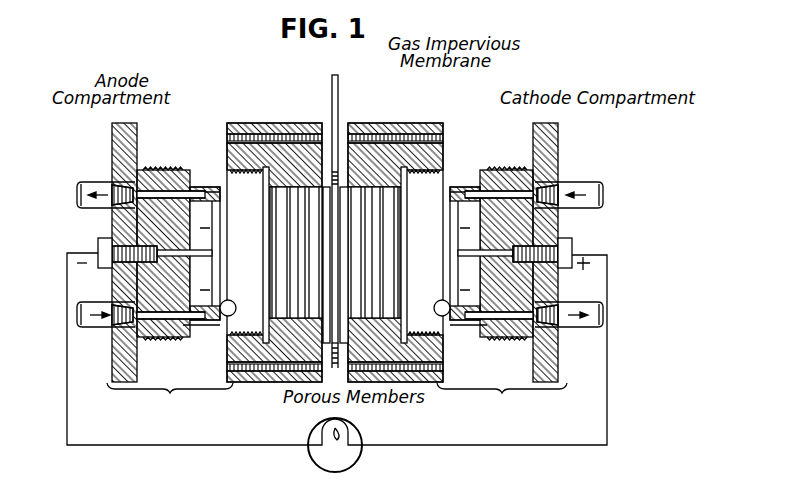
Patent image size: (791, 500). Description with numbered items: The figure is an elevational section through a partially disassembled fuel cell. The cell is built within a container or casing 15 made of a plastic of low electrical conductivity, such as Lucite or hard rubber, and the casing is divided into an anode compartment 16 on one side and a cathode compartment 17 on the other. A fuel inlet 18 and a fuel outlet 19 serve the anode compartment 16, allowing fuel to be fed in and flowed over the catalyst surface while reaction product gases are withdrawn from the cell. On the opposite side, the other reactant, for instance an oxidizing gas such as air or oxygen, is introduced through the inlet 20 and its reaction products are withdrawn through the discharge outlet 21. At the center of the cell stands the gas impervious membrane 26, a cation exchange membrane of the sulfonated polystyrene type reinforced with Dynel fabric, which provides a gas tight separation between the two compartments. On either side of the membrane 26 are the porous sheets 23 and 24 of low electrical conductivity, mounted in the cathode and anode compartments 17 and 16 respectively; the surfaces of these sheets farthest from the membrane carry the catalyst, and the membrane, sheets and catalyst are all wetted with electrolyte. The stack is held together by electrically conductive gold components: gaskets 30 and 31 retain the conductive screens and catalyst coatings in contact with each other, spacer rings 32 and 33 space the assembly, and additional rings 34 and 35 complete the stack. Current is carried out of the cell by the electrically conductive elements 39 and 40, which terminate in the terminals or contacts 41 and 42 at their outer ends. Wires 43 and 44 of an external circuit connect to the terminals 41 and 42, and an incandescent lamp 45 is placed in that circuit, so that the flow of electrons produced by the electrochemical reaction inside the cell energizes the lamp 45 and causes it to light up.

The container or casing 15 is at (270, 124).
The anode compartment 16 is at (207, 210).
The cathode compartment 17 is at (470, 215).
The fuel inlet 18 is at (100, 329).
The fuel outlet 19 is at (98, 182).
The inlet 20 is at (578, 181).
The discharge outlet 21 is at (579, 329).
The porous sheet 23 is at (344, 185).
The porous sheet 24 is at (326, 185).
The gas impervious membrane 26 is at (338, 92).
The gasket 30 is at (366, 215).
The gasket 31 is at (300, 212).
The spacer ring 32 is at (384, 246).
The spacer ring 33 is at (291, 250).
The ring 34 is at (448, 318).
The ring 35 is at (222, 316).
The electrically conductive element 39 is at (468, 258).
The electrically conductive element 40 is at (205, 258).
The terminal 41 is at (572, 242).
The terminal 42 is at (99, 240).
The wire 43 is at (67, 392).
The wire 44 is at (607, 392).
The incandescent lamp 45 is at (357, 460).